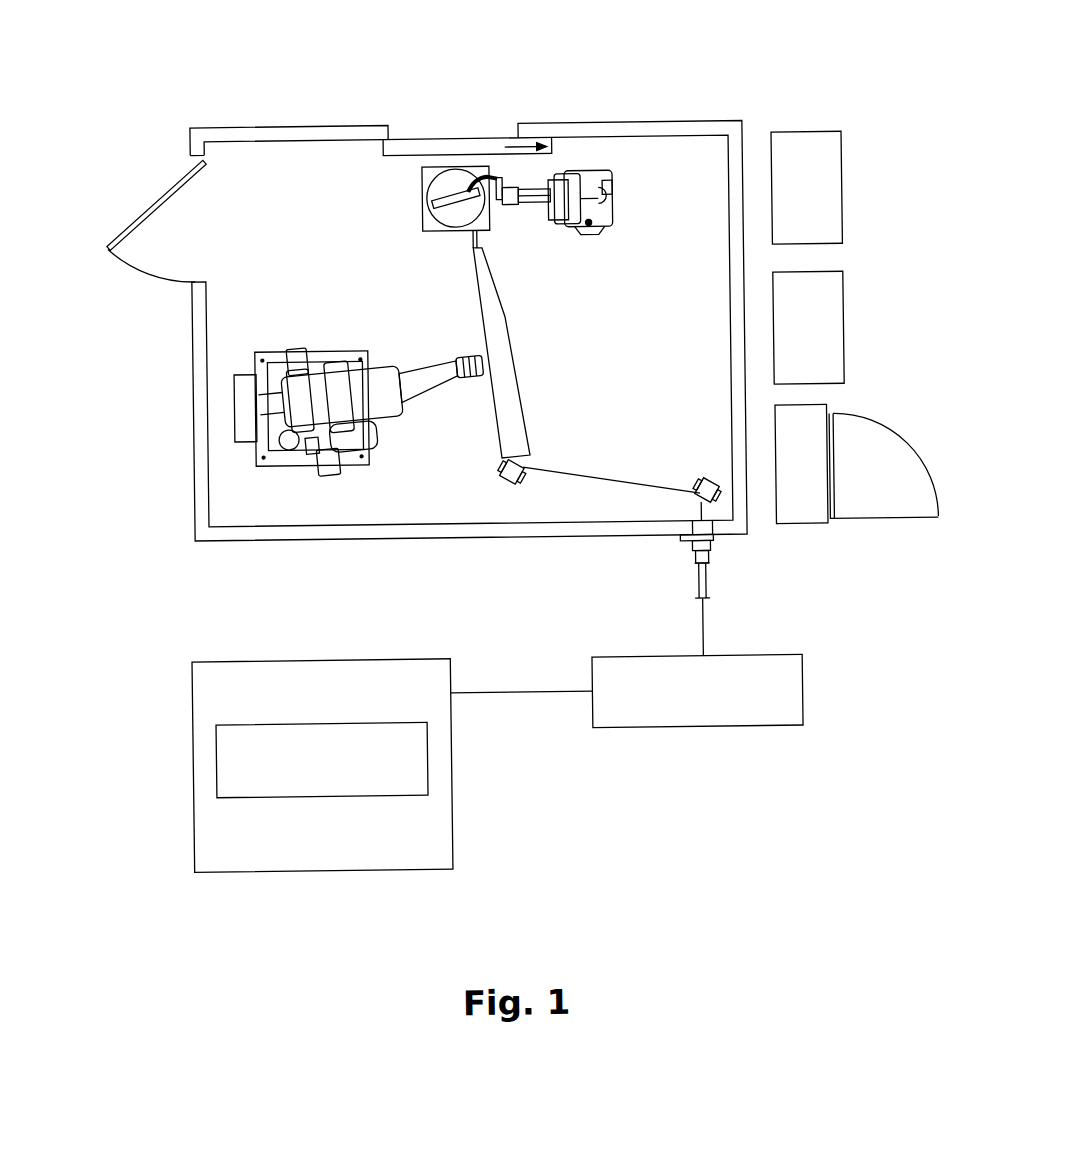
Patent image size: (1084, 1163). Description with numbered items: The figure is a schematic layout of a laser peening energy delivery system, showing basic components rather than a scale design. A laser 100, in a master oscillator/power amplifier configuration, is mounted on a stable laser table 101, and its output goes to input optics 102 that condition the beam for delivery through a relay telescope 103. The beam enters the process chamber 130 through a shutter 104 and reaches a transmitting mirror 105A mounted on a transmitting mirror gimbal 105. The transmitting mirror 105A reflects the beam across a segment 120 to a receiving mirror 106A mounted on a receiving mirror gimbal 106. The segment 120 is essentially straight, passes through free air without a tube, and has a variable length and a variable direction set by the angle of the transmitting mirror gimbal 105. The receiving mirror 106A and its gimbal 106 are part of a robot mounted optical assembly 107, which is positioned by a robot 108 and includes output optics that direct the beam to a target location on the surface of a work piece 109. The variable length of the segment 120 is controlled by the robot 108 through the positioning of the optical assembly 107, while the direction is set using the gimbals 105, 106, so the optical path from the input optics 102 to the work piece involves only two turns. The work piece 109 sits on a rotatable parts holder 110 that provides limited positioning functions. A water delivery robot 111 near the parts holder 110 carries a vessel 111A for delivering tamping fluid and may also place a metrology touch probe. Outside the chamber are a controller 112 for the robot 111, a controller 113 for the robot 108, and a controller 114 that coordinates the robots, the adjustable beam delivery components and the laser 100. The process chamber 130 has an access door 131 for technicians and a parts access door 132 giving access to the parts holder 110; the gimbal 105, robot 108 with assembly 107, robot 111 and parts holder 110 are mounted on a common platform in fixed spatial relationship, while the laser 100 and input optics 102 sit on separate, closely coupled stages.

The laser 100 is at (423, 754).
The laser table 101 is at (440, 840).
The input optics 102 is at (798, 694).
The relay telescope 103 is at (705, 591).
The shutter 104 is at (684, 548).
The transmitting mirror gimbal 105 is at (716, 503).
The transmitting mirror 105A is at (695, 500).
The receiving mirror gimbal 106 is at (498, 475).
The receiving mirror 106A is at (521, 463).
The robot mounted optical assembly 107 is at (471, 282).
The robot 108 is at (325, 350).
The work piece 109 is at (457, 188).
The rotatable parts holder 110 is at (422, 197).
The water delivery robot 111 is at (614, 184).
The vessel 111A is at (505, 178).
The controller 112 is at (807, 146).
The controller 113 is at (806, 286).
The controller 114 is at (804, 426).
The segment 120 is at (633, 484).
The process chamber 130 is at (280, 125).
The access door 131 is at (157, 186).
The parts access door 132 is at (491, 143).